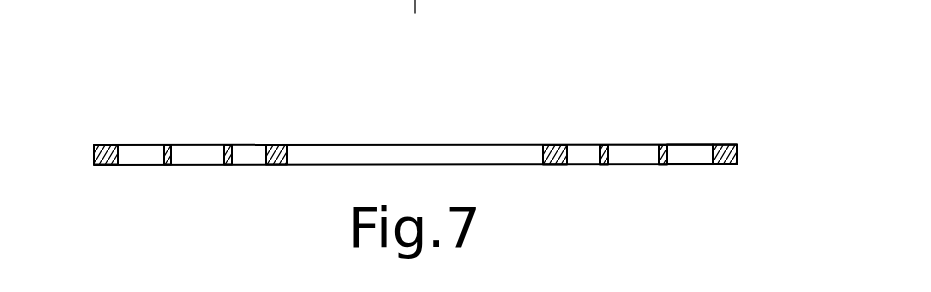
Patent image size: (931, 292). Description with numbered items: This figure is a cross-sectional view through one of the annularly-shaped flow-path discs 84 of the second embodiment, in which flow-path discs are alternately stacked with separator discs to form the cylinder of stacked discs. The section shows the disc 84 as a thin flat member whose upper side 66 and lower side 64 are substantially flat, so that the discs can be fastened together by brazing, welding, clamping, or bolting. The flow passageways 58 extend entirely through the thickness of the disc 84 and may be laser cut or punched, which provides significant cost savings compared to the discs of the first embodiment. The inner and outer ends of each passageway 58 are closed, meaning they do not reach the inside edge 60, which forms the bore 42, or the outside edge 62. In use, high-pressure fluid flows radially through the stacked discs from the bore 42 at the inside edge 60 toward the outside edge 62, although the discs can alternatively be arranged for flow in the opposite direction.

The flow-path disc 84 is at (147, 78).
The bore 42 is at (440, 150).
The flow passageway 58 is at (645, 150).
The inside edge 60 is at (535, 164).
The outside edge 62 is at (737, 149).
The lower side 64 is at (710, 164).
The upper side 66 is at (700, 147).